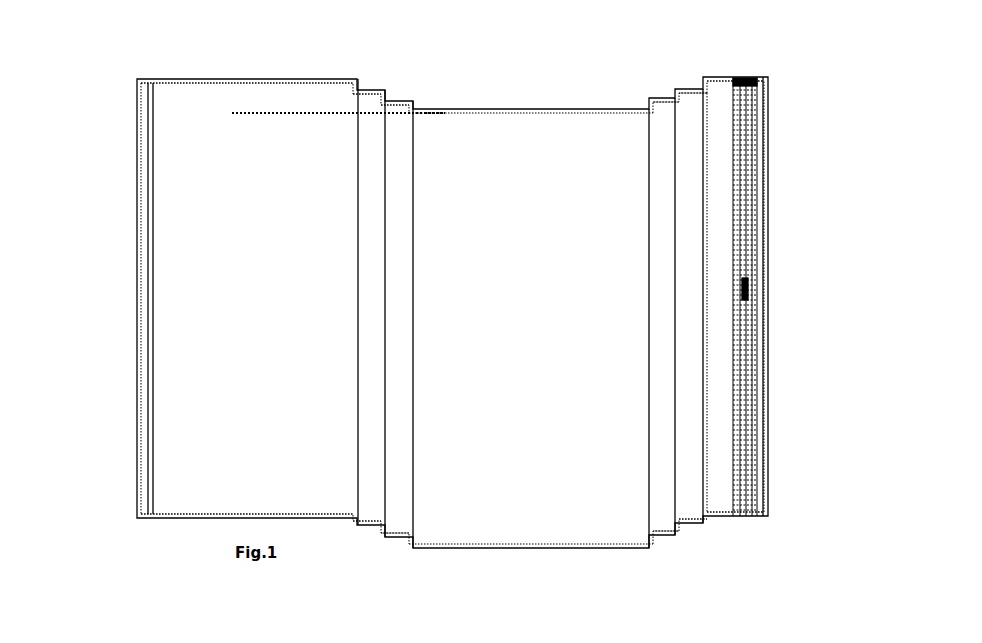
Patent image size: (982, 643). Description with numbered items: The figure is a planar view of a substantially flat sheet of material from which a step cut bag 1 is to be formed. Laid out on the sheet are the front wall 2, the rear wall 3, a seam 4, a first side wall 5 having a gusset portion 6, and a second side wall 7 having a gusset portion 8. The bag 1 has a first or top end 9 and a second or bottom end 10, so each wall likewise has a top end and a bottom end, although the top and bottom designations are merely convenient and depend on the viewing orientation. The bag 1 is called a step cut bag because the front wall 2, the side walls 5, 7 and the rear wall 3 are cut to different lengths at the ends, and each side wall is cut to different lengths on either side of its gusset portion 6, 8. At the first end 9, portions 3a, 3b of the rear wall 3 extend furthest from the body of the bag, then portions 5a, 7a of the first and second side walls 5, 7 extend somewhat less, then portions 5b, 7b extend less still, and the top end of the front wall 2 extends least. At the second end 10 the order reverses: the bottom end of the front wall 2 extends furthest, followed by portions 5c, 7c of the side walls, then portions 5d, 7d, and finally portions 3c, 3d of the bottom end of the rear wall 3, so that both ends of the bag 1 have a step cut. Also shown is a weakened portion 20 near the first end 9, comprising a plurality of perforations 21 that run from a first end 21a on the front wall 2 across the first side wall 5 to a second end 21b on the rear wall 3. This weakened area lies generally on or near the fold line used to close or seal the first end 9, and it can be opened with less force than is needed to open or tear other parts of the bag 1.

The step cut bag 1 is at (525, 33).
The front wall 2 is at (478, 458).
The rear wall 3 is at (210, 380).
The portion of rear wall 3a is at (278, 93).
The portion of rear wall 3b is at (719, 88).
The portion of rear wall 3c is at (195, 503).
The portion of rear wall 3d is at (719, 504).
The seam 4 is at (745, 160).
The first side wall 5 is at (400, 251).
The portion of first side wall 5a is at (372, 93).
The portion of first side wall 5b is at (398, 107).
The portion of first side wall 5c is at (397, 531).
The portion of first side wall 5d is at (375, 517).
The gusset portion 6 is at (386, 280).
The second side wall 7 is at (660, 233).
The portion of second side wall 7a is at (687, 93).
The portion of second side wall 7b is at (666, 107).
The portion of second side wall 7c is at (667, 532).
The portion of second side wall 7d is at (689, 515).
The gusset portion 8 is at (675, 302).
The first end 9 is at (105, 103).
The second end 10 is at (101, 512).
The weakened portion 20 is at (312, 116).
The perforations 21 is at (250, 115).
The first end of perforations 21a is at (443, 115).
The second end of perforations 21b is at (233, 113).